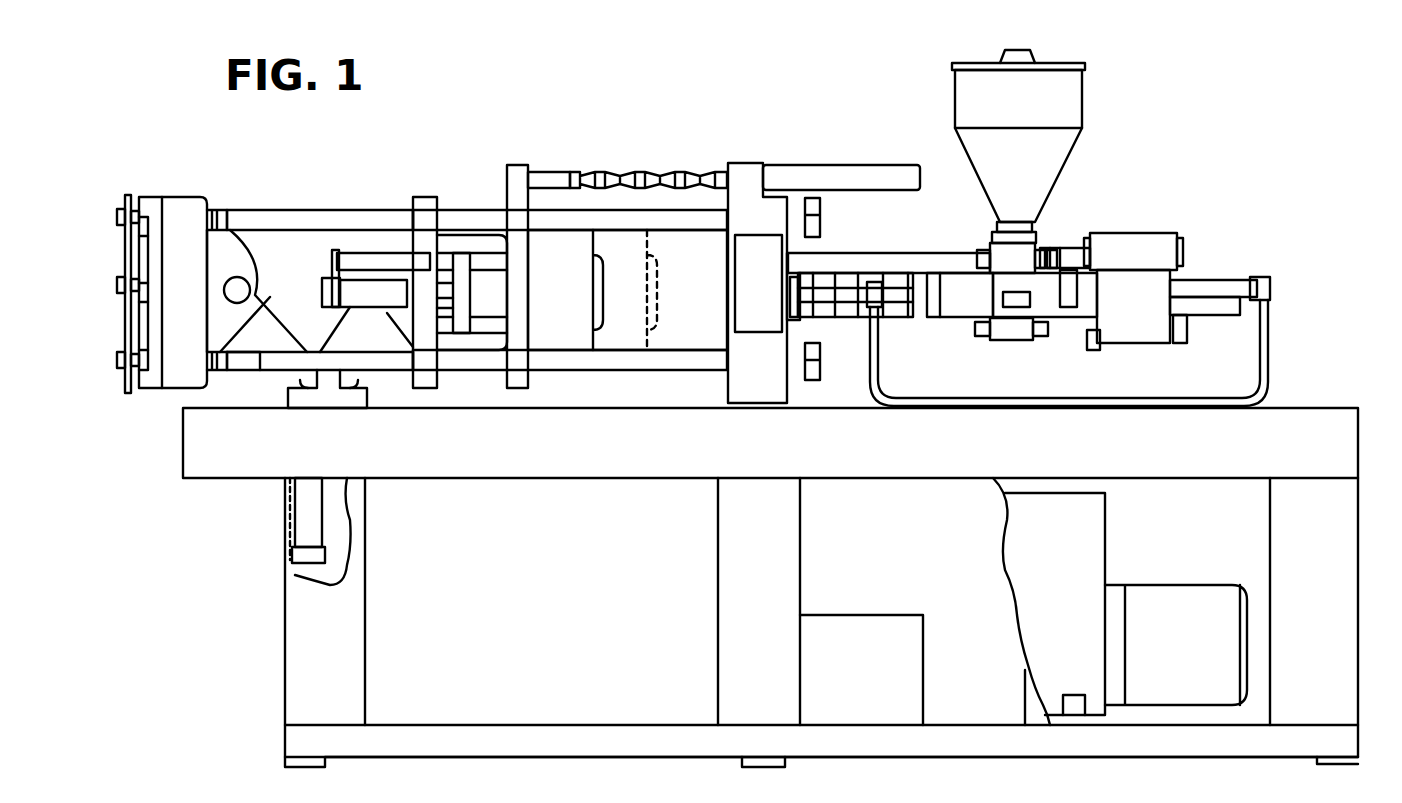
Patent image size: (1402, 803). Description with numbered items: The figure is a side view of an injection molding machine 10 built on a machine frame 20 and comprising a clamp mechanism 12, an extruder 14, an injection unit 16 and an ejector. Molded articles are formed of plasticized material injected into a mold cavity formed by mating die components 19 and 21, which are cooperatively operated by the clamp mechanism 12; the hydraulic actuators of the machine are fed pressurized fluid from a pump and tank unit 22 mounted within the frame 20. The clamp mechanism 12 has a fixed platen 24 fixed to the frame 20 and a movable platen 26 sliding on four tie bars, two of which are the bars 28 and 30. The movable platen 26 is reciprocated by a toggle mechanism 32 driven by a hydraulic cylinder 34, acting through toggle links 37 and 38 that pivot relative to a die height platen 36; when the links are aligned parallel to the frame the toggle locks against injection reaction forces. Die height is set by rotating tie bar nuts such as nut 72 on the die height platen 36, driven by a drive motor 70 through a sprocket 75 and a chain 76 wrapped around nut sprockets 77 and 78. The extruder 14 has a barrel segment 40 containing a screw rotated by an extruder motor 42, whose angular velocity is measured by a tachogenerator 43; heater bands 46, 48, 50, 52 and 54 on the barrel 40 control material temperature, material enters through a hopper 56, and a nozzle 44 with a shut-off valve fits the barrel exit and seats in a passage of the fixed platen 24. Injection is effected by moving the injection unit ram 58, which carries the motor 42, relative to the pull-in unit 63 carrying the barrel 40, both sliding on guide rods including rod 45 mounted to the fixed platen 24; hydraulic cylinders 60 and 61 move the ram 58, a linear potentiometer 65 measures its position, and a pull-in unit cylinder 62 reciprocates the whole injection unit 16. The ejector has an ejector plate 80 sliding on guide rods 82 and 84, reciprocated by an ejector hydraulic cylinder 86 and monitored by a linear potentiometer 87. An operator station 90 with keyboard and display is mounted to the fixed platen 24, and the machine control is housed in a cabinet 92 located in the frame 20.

The injection molding machine 10 is at (690, 60).
The clamp mechanism 12 is at (411, 158).
The extruder 14 is at (928, 218).
The injection unit 16 is at (1134, 166).
The die component 19 is at (575, 314).
The machine frame 20 is at (1318, 412).
The die component 21 is at (708, 296).
The pump and tank unit 22 is at (1076, 564).
The fixed platen 24 is at (745, 176).
The movable platen 26 is at (518, 168).
The tie bar 28 is at (296, 215).
The tie bar 30 is at (255, 366).
The toggle mechanism 32 is at (275, 250).
The hydraulic cylinder 34 is at (300, 512).
The die height platen 36 is at (192, 196).
The toggle link 37 is at (258, 308).
The toggle link 38 is at (350, 340).
The barrel segment 40 is at (866, 265).
The extruder motor 42 is at (1220, 270).
The tachogenerator 43 is at (1090, 350).
The nozzle 44 is at (792, 257).
The injection unit guide rod 45 is at (1245, 300).
The heater band 46 is at (824, 318).
The heater band 48 is at (846, 316).
The heater band 50 is at (870, 281).
The heater band 52 is at (888, 315).
The heater band 54 is at (917, 318).
The hopper 56 is at (1075, 105).
The injection unit ram 58 is at (1150, 316).
The hydraulic cylinder 60 is at (1178, 341).
The hydraulic cylinder 61 is at (1178, 232).
The pull-in unit hydraulic cylinder 62 is at (1063, 327).
The pull-in unit 63 is at (1029, 276).
The linear potentiometer 65 is at (1188, 262).
The drive motor 70 is at (148, 292).
The tie bar nut 72 is at (150, 196).
The sprocket 75 is at (120, 286).
The chain 76 is at (128, 194).
The nut sprocket 77 is at (120, 215).
The nut sprocket 78 is at (120, 364).
The ejector plate 80 is at (460, 333).
The guide rod 82 is at (483, 268).
The guide rod 84 is at (488, 312).
The ejector hydraulic cylinder 86 is at (333, 290).
The linear potentiometer 87 is at (372, 255).
The operator station 90 is at (774, 299).
The cabinet 92 is at (880, 678).